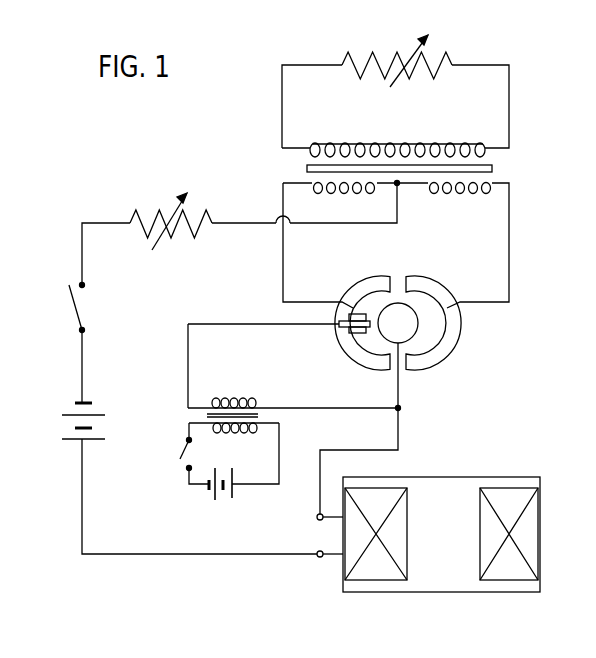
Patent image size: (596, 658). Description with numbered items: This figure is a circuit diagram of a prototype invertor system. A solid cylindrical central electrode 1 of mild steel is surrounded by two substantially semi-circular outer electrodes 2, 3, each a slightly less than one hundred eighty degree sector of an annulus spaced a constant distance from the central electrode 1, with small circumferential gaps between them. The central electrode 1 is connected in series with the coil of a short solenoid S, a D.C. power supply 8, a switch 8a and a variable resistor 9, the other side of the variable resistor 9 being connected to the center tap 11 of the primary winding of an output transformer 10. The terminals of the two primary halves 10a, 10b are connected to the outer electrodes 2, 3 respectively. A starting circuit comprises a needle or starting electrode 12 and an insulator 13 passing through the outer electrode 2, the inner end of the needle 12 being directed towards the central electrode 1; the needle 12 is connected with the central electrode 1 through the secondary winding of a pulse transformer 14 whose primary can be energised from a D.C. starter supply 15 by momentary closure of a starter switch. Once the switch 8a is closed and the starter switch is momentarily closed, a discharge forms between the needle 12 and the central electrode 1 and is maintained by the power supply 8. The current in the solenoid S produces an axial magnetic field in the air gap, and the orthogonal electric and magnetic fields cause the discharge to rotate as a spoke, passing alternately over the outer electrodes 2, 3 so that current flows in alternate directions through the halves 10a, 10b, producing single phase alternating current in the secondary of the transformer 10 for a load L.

The central electrode 1 is at (405, 323).
The outer electrode 2 is at (368, 293).
The outer electrode 3 is at (432, 293).
The solenoid load S is at (513, 502).
The D.C. power supply 8 is at (63, 407).
The switch 8a is at (75, 308).
The variable resistor 9 is at (157, 213).
The output transformer 10 is at (305, 170).
The left hand side of primary winding 10a is at (358, 193).
The half of primary winding 10b is at (462, 192).
The center tap 11 is at (398, 185).
The needle or starting electrode 12 is at (368, 340).
The insulator 13 is at (350, 334).
The pulse transformer 14 is at (195, 415).
The D.C. starter supply 15 is at (212, 500).
The load L is at (372, 57).